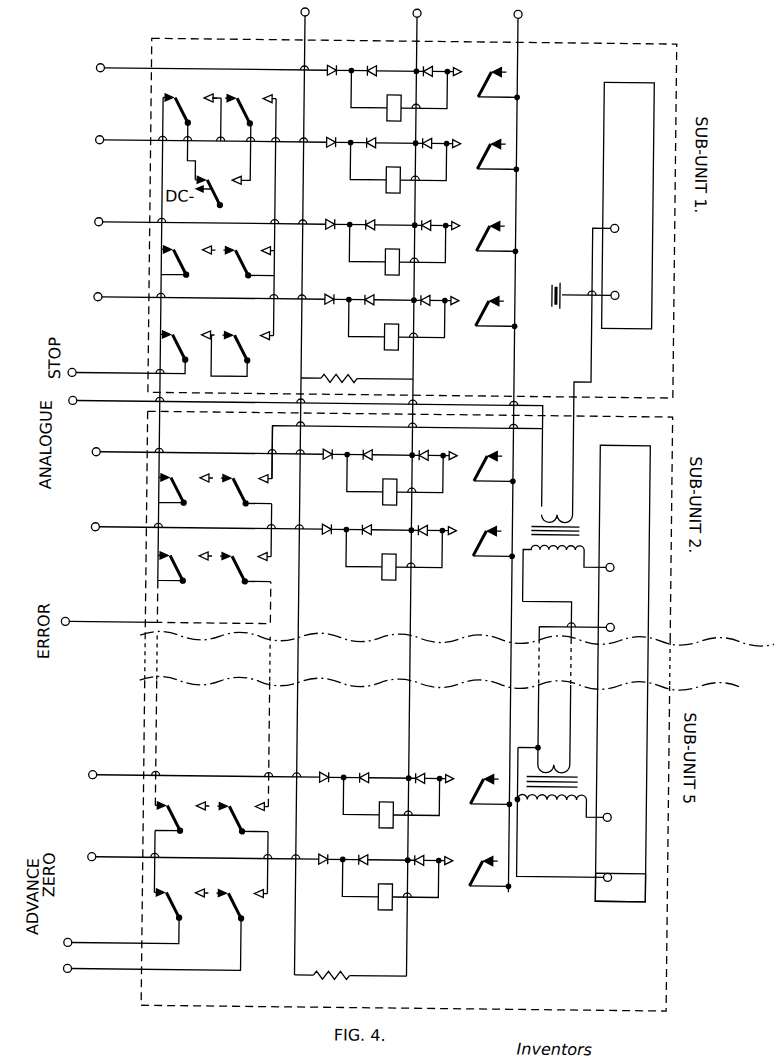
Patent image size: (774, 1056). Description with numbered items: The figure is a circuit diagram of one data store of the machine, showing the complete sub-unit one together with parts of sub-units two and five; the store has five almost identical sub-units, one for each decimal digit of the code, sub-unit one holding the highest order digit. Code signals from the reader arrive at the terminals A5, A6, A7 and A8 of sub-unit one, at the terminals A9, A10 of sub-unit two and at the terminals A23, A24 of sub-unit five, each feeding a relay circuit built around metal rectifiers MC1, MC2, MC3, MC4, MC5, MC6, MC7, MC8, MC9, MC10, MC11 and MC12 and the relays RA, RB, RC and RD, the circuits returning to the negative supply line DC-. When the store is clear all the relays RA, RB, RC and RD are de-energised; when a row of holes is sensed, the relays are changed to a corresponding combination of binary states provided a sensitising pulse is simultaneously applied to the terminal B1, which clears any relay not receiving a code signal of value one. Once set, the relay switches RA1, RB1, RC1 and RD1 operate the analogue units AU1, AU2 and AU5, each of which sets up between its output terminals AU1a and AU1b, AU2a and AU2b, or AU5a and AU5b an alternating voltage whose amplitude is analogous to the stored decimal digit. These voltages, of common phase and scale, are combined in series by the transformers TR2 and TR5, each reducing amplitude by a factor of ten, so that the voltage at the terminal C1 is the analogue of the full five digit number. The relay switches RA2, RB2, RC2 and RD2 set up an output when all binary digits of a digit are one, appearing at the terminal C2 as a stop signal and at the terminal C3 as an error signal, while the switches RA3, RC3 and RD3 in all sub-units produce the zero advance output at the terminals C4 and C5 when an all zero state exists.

The negative DC supply line DC- is at (528, 449).
The sensitising pulse input terminal B1 is at (425, 491).
The code signal input terminal A5 is at (210, 81).
The code signal input terminal A6 is at (209, 154).
The code signal input terminal A7 is at (208, 234).
The code signal input terminal A8 is at (208, 309).
The code signal input terminal A9 is at (200, 463).
The code signal input terminal A10 is at (199, 538).
The code signal input terminal A23 is at (197, 787).
The code signal input terminal A24 is at (196, 869).
The analogue output terminal C1 is at (304, 451).
The stop output terminal C2 is at (126, 364).
The error output terminal C3 is at (109, 633).
The zero advance output terminal C4 is at (121, 931).
The zero advance output terminal C5 is at (152, 954).
The metal rectifier MC1 is at (433, 64).
The metal rectifier MC2 is at (376, 64).
The metal rectifier MC3 is at (335, 64).
The metal rectifier MC4 is at (436, 138).
The metal rectifier MC5 is at (372, 137).
The metal rectifier MC6 is at (334, 137).
The metal rectifier MC7 is at (436, 220).
The metal rectifier MC8 is at (372, 220).
The metal rectifier MC9 is at (333, 218).
The metal rectifier MC10 is at (436, 295).
The metal rectifier MC11 is at (372, 294).
The metal rectifier MC12 is at (333, 293).
The relay RA is at (381, 99).
The relay RB is at (381, 172).
The relay RC is at (381, 249).
The relay RD is at (381, 324).
The relay switch RA1 is at (488, 84).
The relay switch RA2 is at (247, 111).
The relay switch RA3 is at (189, 111).
The relay switch RB1 is at (488, 158).
The relay switch RB2 is at (227, 192).
The relay switch RC1 is at (488, 240).
The relay switch RC2 is at (252, 250).
The relay switch RC3 is at (190, 250).
The relay switch RD1 is at (488, 315).
The relay switch RD2 is at (251, 323).
The relay switch RD3 is at (188, 323).
The analogue unit AU1 is at (630, 327).
The analogue unit output terminal AU1a is at (612, 223).
The analogue unit output terminal AU1b is at (612, 296).
The analogue unit AU2 is at (629, 445).
The analogue unit output terminal AU2a is at (624, 558).
The analogue unit output terminal AU2b is at (591, 624).
The analogue unit AU5 is at (618, 900).
The analogue unit output terminal AU5a is at (621, 806).
The analogue unit output terminal AU5b is at (621, 868).
The transformer TR2 is at (558, 569).
The transformer TR5 is at (553, 812).